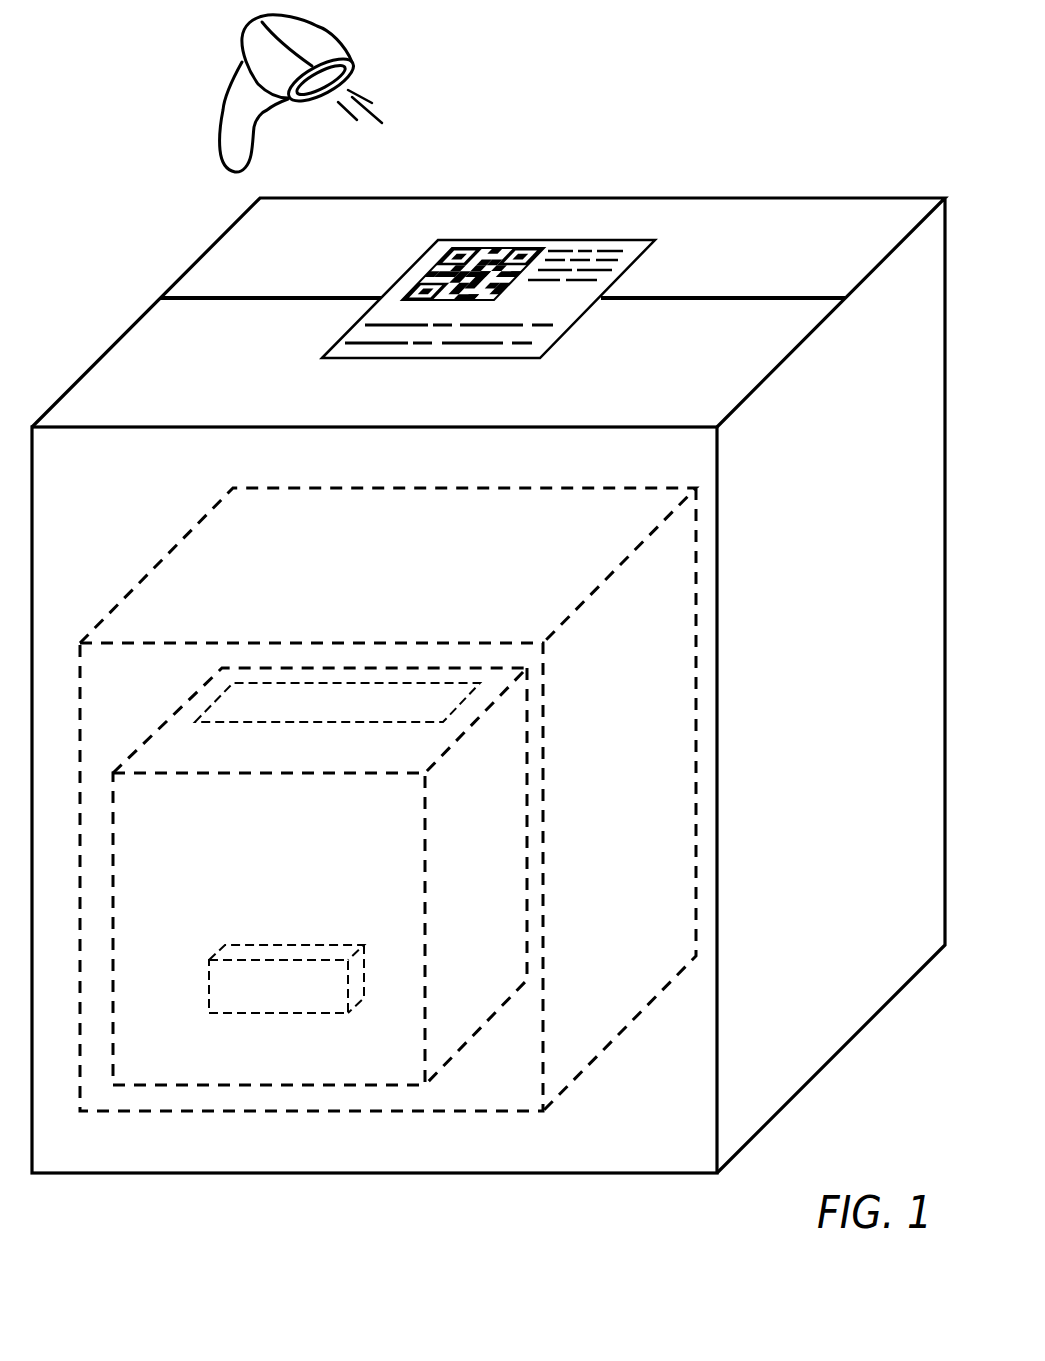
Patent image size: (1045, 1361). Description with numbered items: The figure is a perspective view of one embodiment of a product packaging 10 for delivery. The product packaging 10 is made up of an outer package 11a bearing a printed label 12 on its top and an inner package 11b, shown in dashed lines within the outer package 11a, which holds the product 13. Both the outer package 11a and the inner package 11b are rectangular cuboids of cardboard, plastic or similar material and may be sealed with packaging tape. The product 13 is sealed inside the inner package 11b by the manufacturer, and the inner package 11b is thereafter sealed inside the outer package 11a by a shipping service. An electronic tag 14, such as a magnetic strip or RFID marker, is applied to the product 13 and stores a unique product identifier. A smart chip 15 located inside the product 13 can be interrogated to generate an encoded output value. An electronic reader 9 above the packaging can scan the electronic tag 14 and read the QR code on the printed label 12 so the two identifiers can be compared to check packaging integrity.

The electronic reader 9 is at (242, 36).
The product packaging 10 is at (176, 193).
The outer package 11a is at (700, 198).
The inner package 11b is at (160, 565).
The printed label 12 is at (527, 360).
The product 13 is at (488, 1023).
The electronic tag 14 is at (218, 723).
The smart chip 15 is at (265, 943).